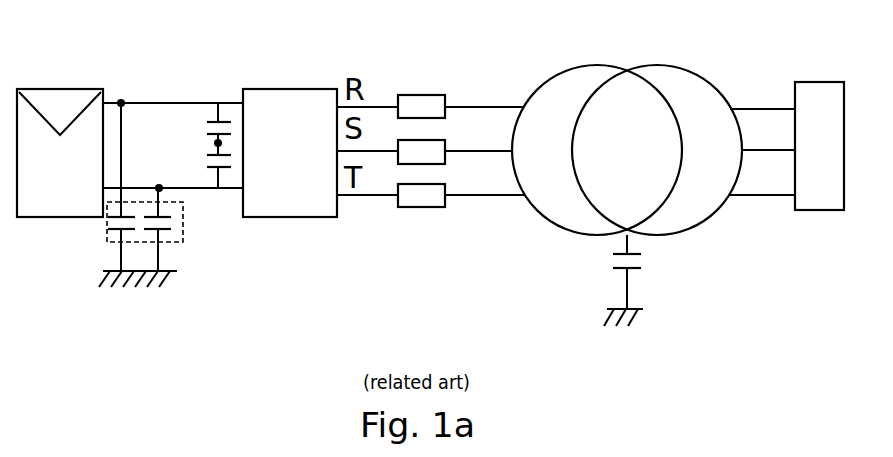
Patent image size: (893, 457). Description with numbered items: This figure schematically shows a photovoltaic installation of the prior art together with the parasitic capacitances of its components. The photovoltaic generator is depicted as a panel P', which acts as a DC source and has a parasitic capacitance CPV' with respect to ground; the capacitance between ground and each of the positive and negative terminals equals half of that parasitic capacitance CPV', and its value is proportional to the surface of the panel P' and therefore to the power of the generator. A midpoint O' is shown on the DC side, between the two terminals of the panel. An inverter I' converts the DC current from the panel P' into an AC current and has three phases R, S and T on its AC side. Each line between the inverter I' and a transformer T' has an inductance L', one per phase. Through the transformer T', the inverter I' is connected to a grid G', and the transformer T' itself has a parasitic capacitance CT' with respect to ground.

The panel P' is at (60, 153).
The midpoint of DC link capacitor O' is at (196, 108).
The parasitic capacitance CPV' is at (175, 217).
The inverter I' is at (290, 153).
The inductance L' is at (443, 112).
The transformer T' is at (627, 150).
The parasitic capacitance CT' is at (645, 280).
The grid G' is at (832, 176).